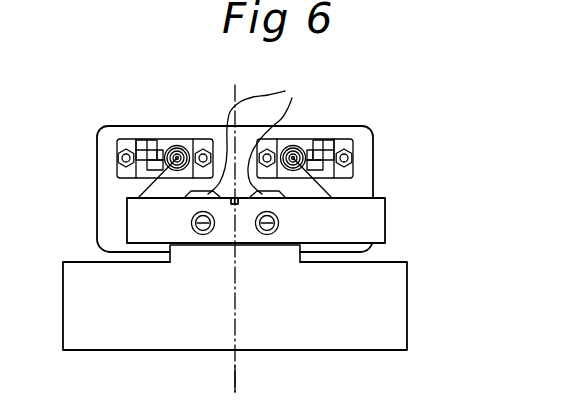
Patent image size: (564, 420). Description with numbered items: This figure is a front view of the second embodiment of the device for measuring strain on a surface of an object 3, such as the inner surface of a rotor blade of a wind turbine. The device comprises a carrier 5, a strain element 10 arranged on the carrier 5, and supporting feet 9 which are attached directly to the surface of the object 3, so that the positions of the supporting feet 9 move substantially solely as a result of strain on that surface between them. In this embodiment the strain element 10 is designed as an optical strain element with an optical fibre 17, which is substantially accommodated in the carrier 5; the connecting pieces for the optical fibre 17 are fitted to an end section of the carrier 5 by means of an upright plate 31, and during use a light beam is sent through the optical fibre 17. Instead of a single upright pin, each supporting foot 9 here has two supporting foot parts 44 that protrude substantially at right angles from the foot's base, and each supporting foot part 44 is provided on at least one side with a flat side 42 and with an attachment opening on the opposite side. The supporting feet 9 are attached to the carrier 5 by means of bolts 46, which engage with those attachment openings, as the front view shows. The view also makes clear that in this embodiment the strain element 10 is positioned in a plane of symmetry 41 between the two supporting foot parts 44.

The object 3 is at (388, 318).
The carrier 5 is at (373, 232).
The supporting foot 9 is at (273, 257).
The strain element 10 is at (233, 201).
The optical fibre 17 is at (318, 186).
The upright plate 31 is at (357, 135).
The plane of symmetry 41 is at (234, 379).
The flat side 42 is at (51, 3).
The supporting foot part 44 is at (259, 135).
The bolt 46 is at (191, 221).